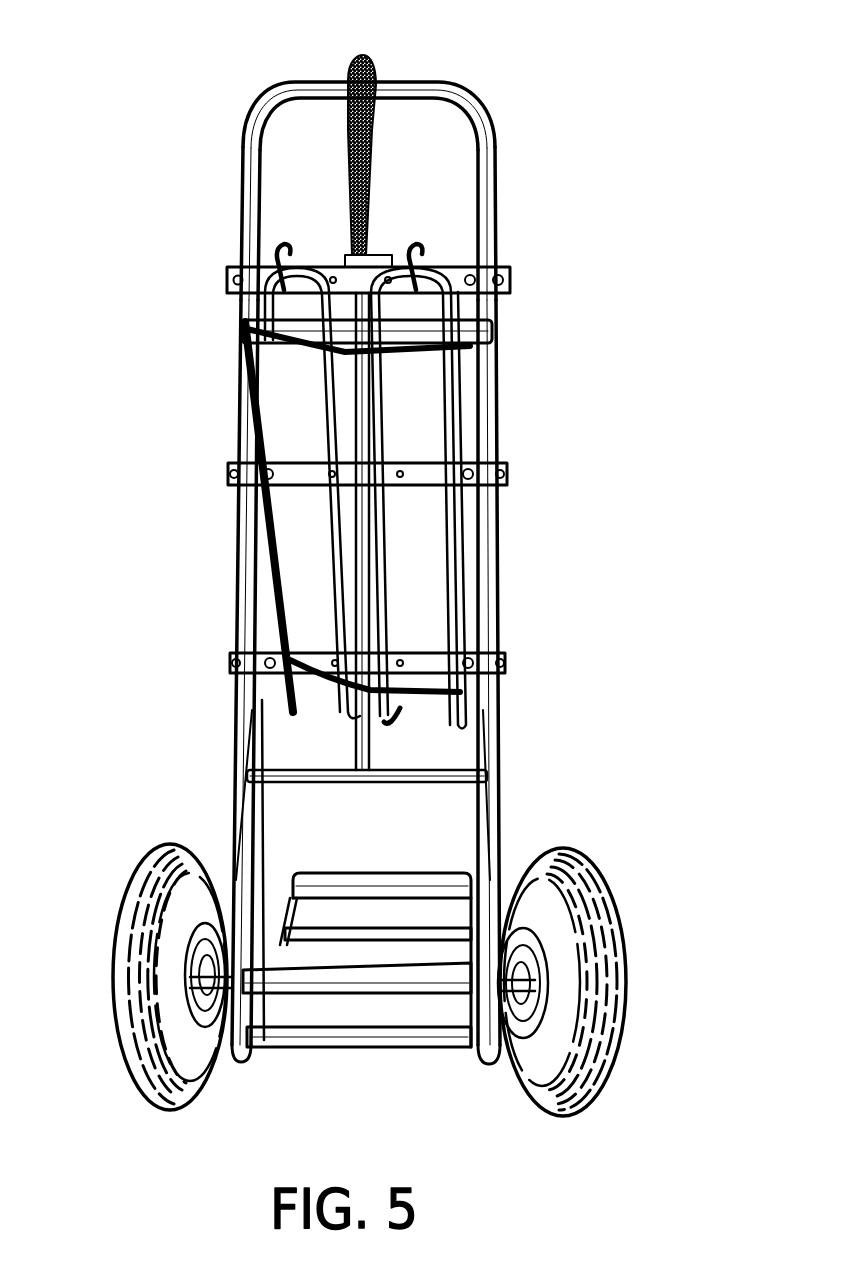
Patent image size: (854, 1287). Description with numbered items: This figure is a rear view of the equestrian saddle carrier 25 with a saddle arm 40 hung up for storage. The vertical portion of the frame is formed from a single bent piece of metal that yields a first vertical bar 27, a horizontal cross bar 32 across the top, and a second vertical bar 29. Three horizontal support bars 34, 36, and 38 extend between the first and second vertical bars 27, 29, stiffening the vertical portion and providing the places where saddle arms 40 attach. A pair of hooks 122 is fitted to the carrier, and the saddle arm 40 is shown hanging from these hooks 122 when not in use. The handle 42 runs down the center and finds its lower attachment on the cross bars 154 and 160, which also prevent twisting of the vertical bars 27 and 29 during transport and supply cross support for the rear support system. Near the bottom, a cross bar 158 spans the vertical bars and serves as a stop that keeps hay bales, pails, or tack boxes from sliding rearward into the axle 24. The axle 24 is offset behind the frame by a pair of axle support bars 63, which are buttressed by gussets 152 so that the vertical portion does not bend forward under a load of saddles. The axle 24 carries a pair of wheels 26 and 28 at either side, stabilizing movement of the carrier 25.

The axle 24 is at (425, 988).
The saddle carrier 25 is at (640, 486).
The wheel 26 is at (125, 892).
The first vertical bar 27 is at (242, 222).
The wheel 28 is at (605, 906).
The second vertical bar 29 is at (497, 222).
The horizontal cross bar 32 is at (432, 82).
The horizontal support bar 34 is at (510, 280).
The horizontal support bar 36 is at (508, 478).
The horizontal support bar 38 is at (508, 666).
The saddle arm 40 is at (466, 606).
The handle 42 is at (372, 158).
The axle support bars 63 is at (240, 408).
The hooks 122 is at (285, 255).
The gussets 152 is at (235, 1055).
The cross bar 154 is at (468, 330).
The cross bar 158 is at (310, 968).
The cross bar 160 is at (385, 782).